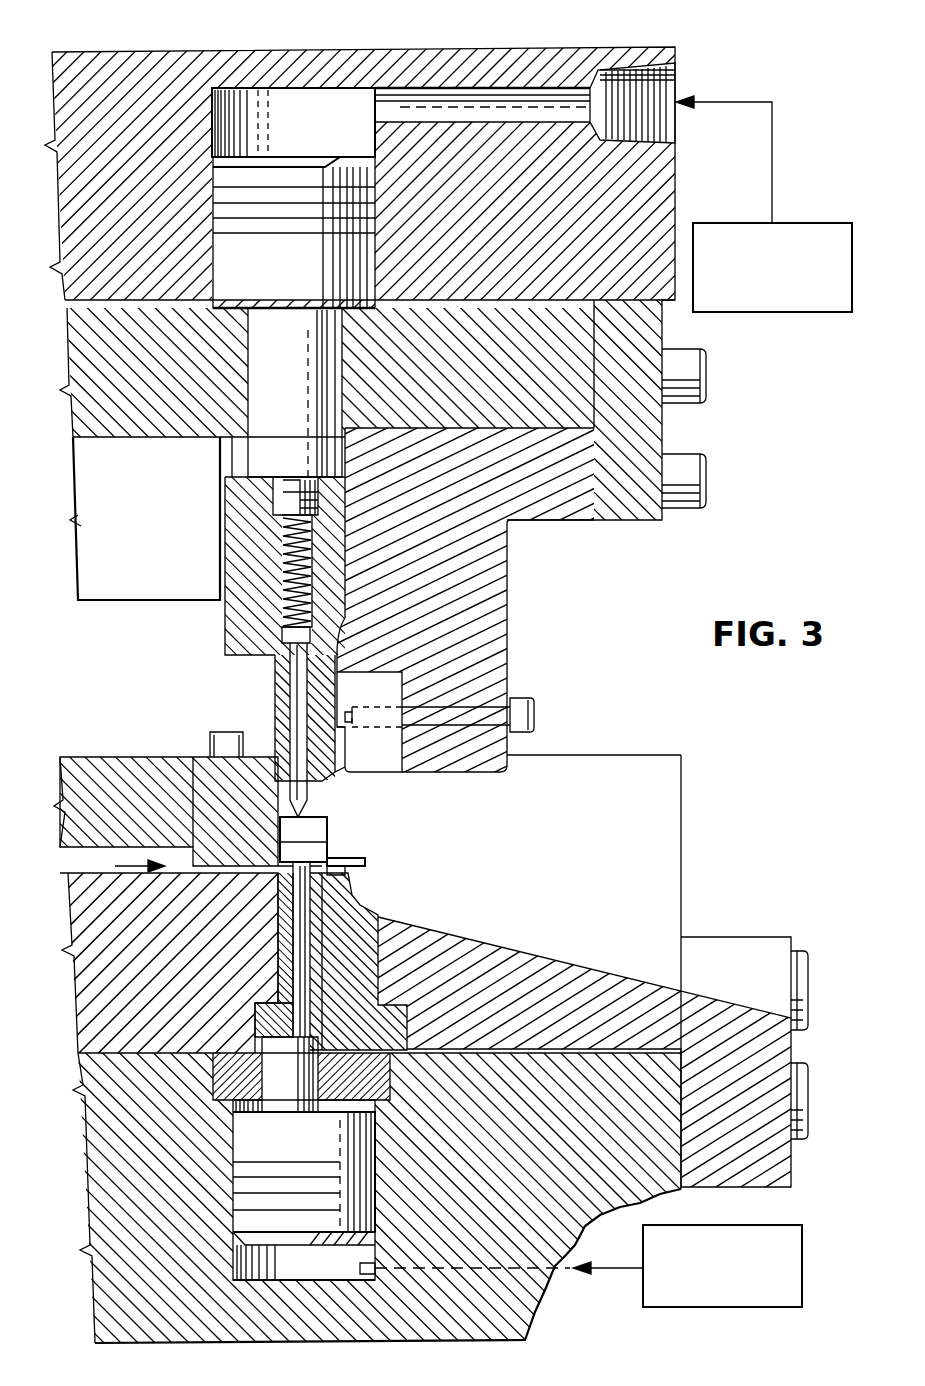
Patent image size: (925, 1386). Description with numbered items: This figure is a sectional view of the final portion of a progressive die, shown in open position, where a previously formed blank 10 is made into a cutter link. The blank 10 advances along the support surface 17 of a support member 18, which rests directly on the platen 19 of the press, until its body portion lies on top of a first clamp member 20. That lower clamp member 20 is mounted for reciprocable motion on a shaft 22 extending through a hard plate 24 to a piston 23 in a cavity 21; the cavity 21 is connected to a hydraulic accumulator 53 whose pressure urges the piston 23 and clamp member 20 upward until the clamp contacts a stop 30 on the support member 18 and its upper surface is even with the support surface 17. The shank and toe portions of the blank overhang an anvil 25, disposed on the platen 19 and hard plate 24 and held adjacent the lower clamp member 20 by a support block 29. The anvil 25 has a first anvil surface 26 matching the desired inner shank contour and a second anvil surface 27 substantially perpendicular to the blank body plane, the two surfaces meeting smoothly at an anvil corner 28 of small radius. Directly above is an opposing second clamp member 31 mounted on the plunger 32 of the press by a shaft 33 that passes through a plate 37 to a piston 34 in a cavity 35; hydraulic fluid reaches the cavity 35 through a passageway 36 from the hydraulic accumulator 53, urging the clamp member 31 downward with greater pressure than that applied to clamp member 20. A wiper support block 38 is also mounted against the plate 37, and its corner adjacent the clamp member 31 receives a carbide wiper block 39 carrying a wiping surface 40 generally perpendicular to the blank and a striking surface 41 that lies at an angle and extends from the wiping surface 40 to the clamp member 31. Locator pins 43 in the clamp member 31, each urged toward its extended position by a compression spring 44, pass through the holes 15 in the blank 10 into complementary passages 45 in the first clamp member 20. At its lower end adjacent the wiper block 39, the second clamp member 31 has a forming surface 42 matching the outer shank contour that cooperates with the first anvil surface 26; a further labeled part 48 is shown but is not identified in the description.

The blank 10 is at (368, 856).
The holes 15 is at (290, 875).
The support surface 17 is at (85, 870).
The support member 18 is at (85, 978).
The platen 19 is at (95, 1283).
The first clamp member 20 is at (255, 1020).
The cavity 21 is at (292, 1277).
The shaft 22 is at (275, 1078).
The piston 23 is at (292, 1155).
The hard plate 24 is at (388, 1072).
The anvil 25 is at (365, 950).
The first anvil surface 26 is at (318, 862).
The second anvil surface 27 is at (350, 890).
The anvil corner 28 is at (355, 860).
The support block 29 is at (500, 955).
The stop 30 is at (273, 1000).
The second clamp member 31 is at (275, 679).
The plunger 32 is at (658, 207).
The shaft 33 is at (279, 425).
The piston 34 is at (303, 170).
The cavity 35 is at (276, 120).
The passageway 36 is at (480, 100).
The plate 37 is at (85, 363).
The wiper support block 38 is at (495, 592).
The carbide wiper block 39 is at (390, 770).
The wiping surface 40 is at (345, 752).
The striking surface 41 is at (348, 716).
The forming surface 42 is at (325, 775).
The locator pins 43 is at (290, 712).
The compression spring 44 is at (282, 602).
The complementary passages 45 is at (295, 942).
The adjusting screw 48 is at (520, 705).
The hydraulic accumulator 53 is at (797, 313).